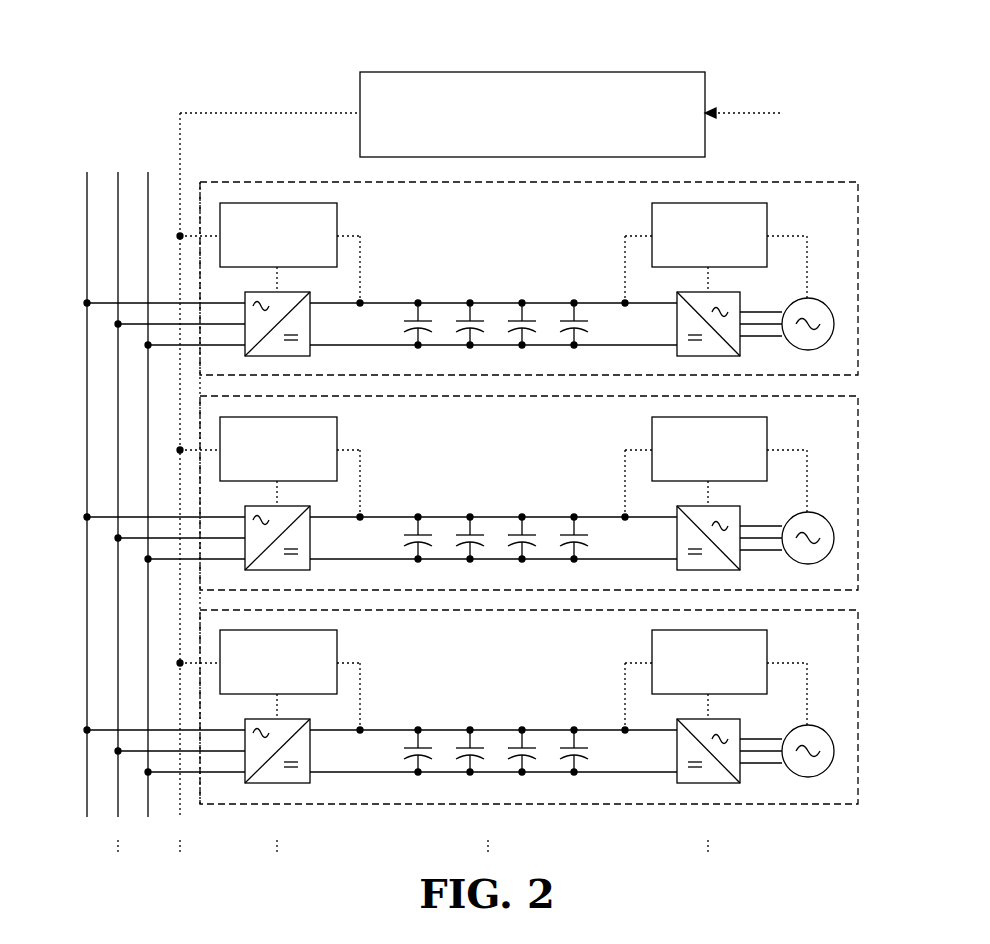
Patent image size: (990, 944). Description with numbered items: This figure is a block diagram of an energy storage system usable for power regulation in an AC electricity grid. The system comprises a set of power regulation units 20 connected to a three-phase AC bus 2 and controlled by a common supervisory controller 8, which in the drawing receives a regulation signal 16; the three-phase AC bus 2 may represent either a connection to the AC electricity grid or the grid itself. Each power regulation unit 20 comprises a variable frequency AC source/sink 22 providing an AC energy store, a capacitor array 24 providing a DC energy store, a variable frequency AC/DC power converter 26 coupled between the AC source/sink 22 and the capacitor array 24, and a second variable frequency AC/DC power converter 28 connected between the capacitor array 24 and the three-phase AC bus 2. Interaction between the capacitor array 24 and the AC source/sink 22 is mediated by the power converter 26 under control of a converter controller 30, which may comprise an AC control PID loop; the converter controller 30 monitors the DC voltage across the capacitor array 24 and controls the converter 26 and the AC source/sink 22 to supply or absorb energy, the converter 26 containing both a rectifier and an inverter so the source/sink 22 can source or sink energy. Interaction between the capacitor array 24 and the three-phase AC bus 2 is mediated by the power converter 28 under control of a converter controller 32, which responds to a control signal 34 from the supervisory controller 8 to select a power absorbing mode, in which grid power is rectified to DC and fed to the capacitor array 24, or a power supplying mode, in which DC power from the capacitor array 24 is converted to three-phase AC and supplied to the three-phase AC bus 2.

The 3-phase AC bus 2 is at (42, 288).
The supervisory controller 8 is at (525, 141).
The regulation signal 16 is at (743, 113).
The power regulation unit 20 is at (858, 233).
The variable frequency AC source/sink 22 is at (823, 300).
The capacitor array 24 is at (526, 271).
The variable frequency AC/DC power converter 26 is at (740, 293).
The variable frequency AC/DC power converter 28 is at (244, 292).
The converter controller 30 is at (649, 217).
The converter controller 32 is at (339, 222).
The control signal 34 is at (272, 112).